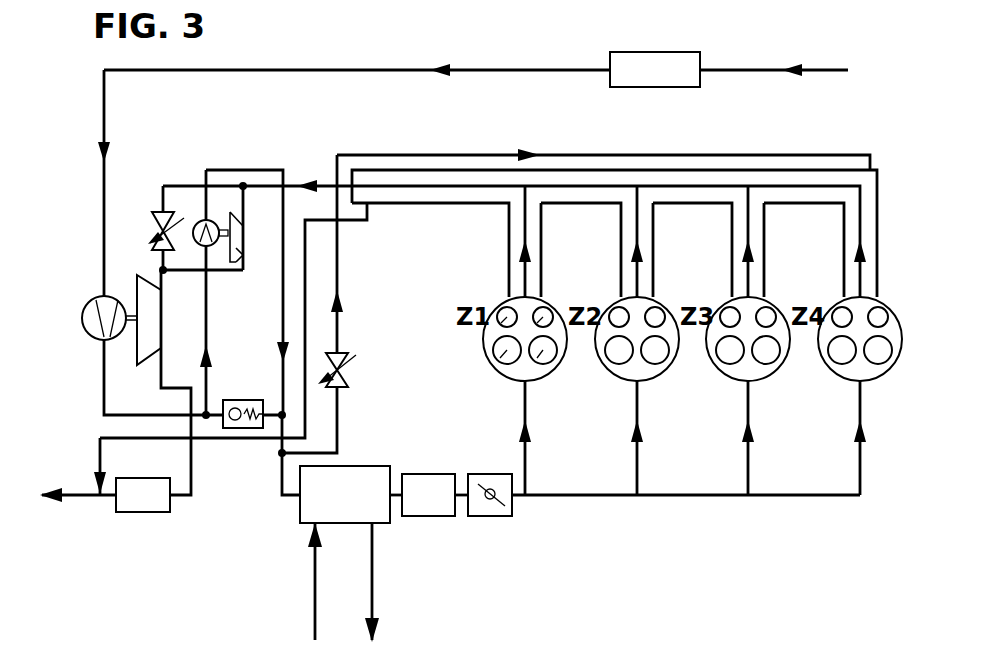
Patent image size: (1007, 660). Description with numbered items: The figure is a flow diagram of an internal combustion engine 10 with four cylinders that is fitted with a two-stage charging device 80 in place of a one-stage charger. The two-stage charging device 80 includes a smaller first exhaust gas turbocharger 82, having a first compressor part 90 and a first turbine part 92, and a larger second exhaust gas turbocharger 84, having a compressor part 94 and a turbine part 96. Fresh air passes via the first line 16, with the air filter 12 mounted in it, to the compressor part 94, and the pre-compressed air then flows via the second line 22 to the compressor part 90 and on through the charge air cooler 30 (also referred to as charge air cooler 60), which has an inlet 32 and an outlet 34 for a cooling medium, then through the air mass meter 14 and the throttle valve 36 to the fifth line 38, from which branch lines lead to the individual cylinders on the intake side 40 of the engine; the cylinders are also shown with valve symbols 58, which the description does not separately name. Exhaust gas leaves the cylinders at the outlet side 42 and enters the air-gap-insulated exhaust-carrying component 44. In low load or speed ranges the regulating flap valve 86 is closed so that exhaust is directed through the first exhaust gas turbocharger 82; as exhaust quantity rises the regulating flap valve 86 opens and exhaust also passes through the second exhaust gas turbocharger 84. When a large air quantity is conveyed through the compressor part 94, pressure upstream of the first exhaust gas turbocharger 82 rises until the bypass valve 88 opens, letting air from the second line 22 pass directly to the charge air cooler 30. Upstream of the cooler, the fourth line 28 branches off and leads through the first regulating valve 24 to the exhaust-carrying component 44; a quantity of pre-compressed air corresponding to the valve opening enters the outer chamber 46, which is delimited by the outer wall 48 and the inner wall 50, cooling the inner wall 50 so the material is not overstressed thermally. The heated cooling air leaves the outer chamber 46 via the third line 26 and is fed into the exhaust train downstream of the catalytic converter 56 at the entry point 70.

The internal combustion engine 10 is at (878, 395).
The air filter 12 is at (657, 80).
The air mass meter 14 is at (430, 510).
The first line 16 is at (310, 72).
The second line 22 is at (103, 357).
The first regulating valve 24 is at (346, 377).
The third line 26 is at (305, 262).
The fourth line 28 is at (337, 330).
The charge air cooler 30 is at (348, 512).
The inlet 32 is at (312, 602).
The outlet 34 is at (378, 612).
The throttle valve 36 is at (490, 510).
The fifth line 38 is at (690, 497).
The intake side 40 is at (707, 442).
The outlet side 42 is at (472, 139).
The exhaust-carrying component 44 is at (792, 172).
The outer chamber 46 is at (722, 180).
The outer wall 48 is at (366, 168).
The inner wall 50 is at (585, 180).
The catalytic converter 56 is at (145, 500).
The exhaust valves 58 is at (500, 370).
The charge air cooler 60 is at (502, 306).
The entry point 70 is at (101, 505).
The two-stage charging device 80 is at (145, 262).
The first exhaust gas turbocharger 82 is at (222, 200).
The second exhaust gas turbocharger 84 is at (125, 292).
The regulating flap valve 86 is at (163, 212).
The bypass valve 88 is at (250, 430).
The first compressor part 90 is at (206, 220).
The first turbine part 92 is at (238, 258).
The compressor part 94 is at (98, 296).
The turbine part 96 is at (135, 358).